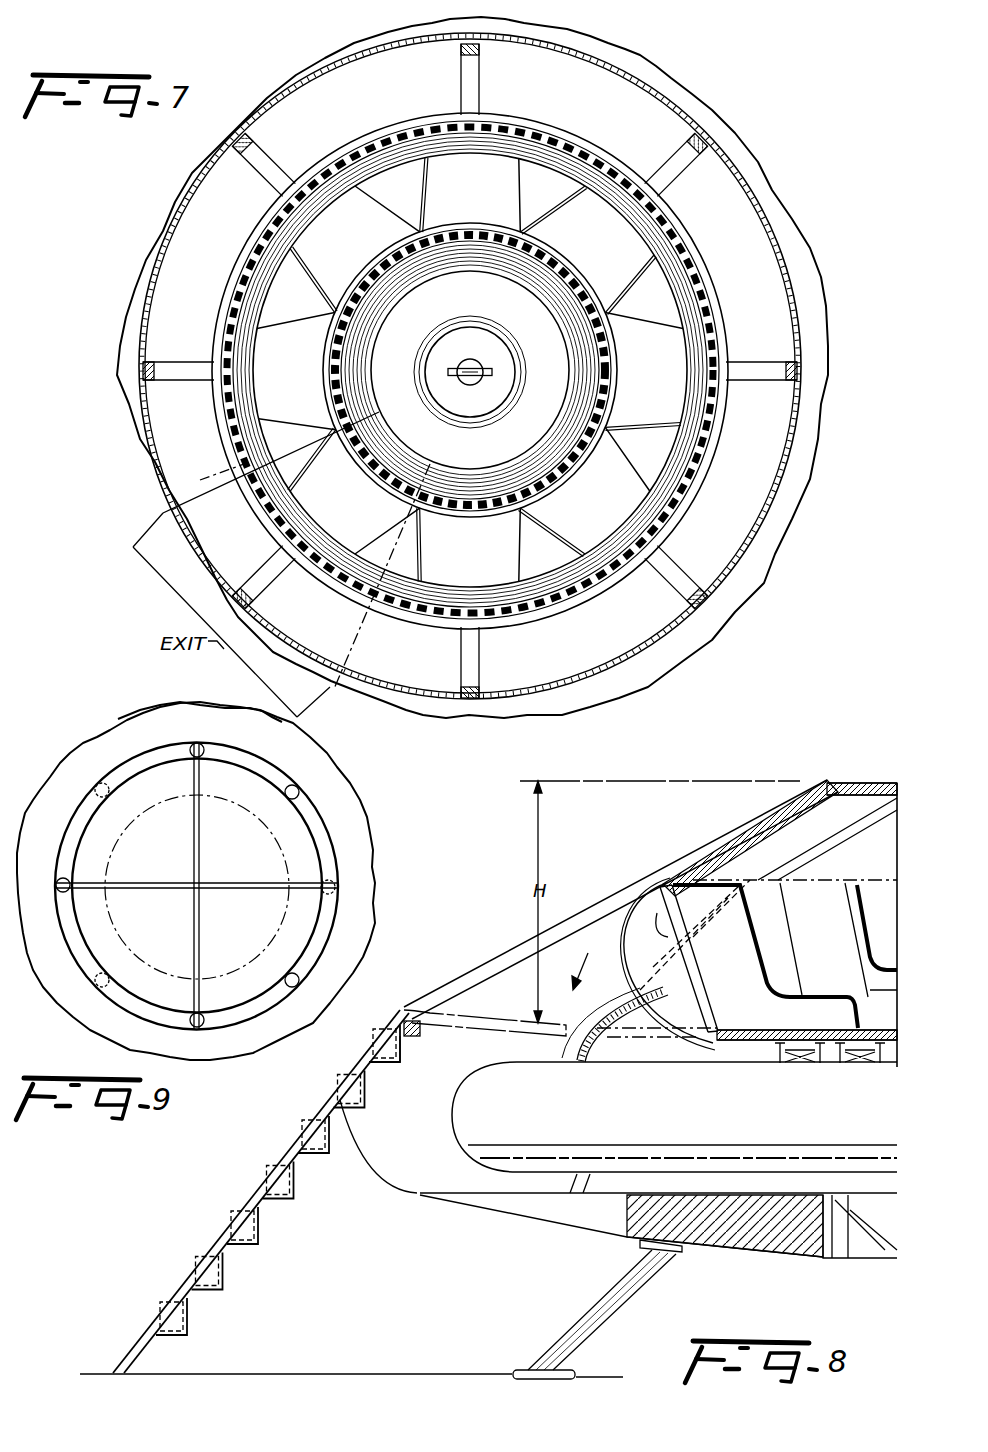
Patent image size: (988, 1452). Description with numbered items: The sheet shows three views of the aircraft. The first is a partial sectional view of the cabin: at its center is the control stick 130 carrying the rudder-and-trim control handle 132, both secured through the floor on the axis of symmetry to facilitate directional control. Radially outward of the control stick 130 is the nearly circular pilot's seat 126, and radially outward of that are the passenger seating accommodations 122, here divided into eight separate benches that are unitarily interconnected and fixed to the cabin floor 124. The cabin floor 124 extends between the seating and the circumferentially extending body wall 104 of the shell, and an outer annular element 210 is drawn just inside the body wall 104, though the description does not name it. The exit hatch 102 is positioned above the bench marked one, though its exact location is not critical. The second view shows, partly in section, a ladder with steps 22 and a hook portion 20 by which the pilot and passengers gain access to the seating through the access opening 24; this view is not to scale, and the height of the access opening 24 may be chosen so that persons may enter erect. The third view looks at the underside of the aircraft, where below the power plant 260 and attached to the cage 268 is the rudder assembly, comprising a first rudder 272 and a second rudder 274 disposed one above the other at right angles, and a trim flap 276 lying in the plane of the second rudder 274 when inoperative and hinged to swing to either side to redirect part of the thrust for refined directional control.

In FIG. 7, the body or shell 104 is at (622, 73).
In FIG. 7, the annular ring 210 is at (805, 330).
In FIG. 7, the cabin floor 124 is at (377, 130).
In FIG. 8, the cabin floor 124 is at (868, 1000).
In FIG. 7, the passenger seating accommodations 122 is at (310, 240).
In FIG. 7, the pilot's seat 126 is at (483, 300).
In FIG. 7, the control stick 130 is at (483, 381).
In FIG. 7, the rudder-and-trim control handle 132 is at (462, 366).
In FIG. 9, the cage 268 is at (105, 782).
In FIG. 9, the power plant 260 is at (282, 850).
In FIG. 9, the trim flap 276 is at (303, 890).
In FIG. 9, the first rudder 272 is at (195, 920).
In FIG. 9, the second rudder 274 is at (253, 890).
In FIG. 8, the access opening 24 is at (603, 913).
In FIG. 8, the hook portion 20 is at (420, 1007).
In FIG. 8, the entrance/exit hatch or door 102 is at (662, 887).
In FIG. 8, the steps 22 is at (260, 1230).